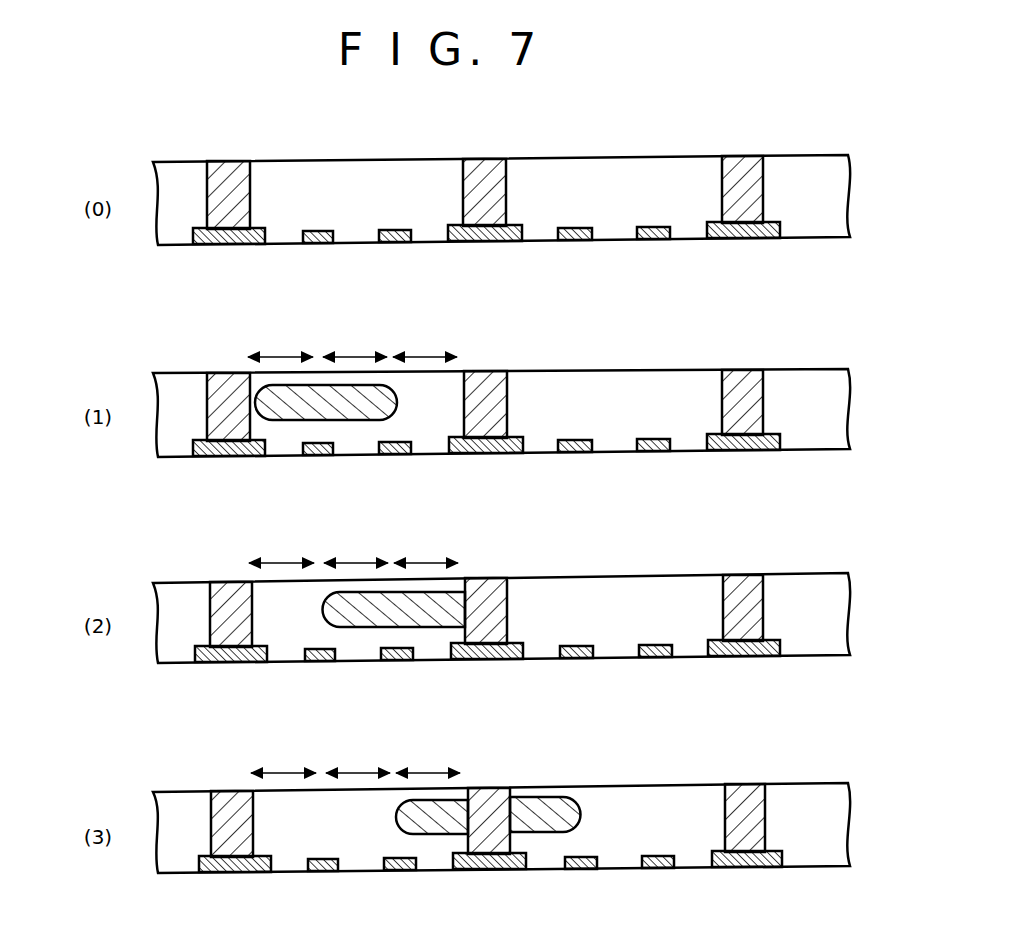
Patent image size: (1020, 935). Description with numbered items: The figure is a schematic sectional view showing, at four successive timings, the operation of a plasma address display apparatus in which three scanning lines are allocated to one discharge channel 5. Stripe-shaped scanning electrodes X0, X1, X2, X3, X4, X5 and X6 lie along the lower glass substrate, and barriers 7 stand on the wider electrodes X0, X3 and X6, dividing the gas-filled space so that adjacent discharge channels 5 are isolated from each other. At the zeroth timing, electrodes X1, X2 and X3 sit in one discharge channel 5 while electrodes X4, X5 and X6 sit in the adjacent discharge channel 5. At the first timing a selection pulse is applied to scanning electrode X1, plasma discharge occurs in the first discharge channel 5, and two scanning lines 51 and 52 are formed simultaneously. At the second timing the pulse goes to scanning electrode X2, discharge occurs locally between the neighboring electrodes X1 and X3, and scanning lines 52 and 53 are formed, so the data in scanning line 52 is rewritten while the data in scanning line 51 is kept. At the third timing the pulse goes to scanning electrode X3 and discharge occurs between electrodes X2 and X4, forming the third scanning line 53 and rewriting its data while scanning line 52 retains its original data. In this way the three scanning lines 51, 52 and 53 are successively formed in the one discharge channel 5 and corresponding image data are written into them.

The discharge channel 5 is at (612, 180).
The barrier 7 is at (489, 166).
The scanning line 51 is at (285, 355).
The scanning line 52 is at (356, 355).
The scanning line 53 is at (428, 355).
The scanning electrode X0 is at (228, 246).
The scanning electrode X1 is at (316, 245).
The scanning electrode X2 is at (395, 244).
The scanning electrode X3 is at (483, 243).
The scanning electrode X4 is at (575, 242).
The scanning electrode X5 is at (653, 241).
The scanning electrode X6 is at (745, 240).